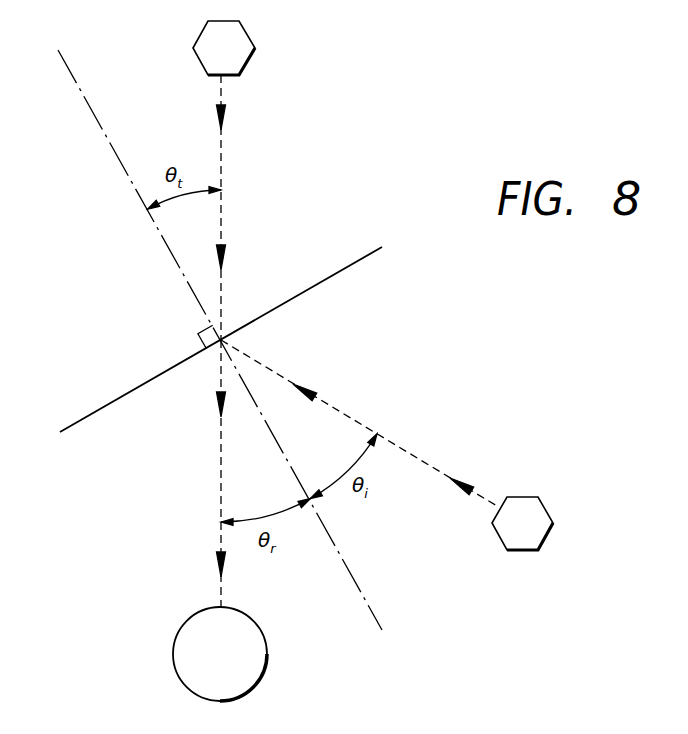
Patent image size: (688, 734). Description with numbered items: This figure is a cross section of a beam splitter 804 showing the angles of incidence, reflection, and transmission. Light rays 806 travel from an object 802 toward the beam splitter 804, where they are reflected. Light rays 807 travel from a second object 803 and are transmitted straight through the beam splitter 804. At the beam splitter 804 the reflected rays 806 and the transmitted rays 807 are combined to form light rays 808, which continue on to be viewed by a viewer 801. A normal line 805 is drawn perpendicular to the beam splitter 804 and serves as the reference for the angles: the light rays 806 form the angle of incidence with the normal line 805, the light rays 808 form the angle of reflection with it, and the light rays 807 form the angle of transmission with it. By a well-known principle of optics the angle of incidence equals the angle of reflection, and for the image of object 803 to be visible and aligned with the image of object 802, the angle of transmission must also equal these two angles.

The viewer 801 is at (176, 632).
The object 802 is at (545, 508).
The object 803 is at (235, 43).
The beam splitter 804 is at (350, 265).
The normal line 805 is at (97, 118).
The light rays 806 is at (410, 452).
The light rays 807 is at (222, 160).
The light rays 808 is at (219, 453).